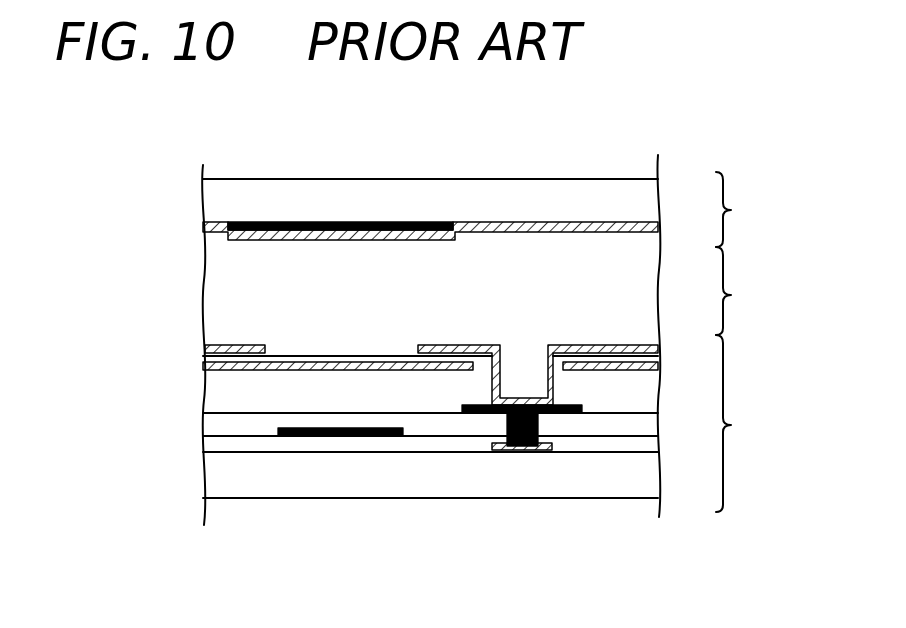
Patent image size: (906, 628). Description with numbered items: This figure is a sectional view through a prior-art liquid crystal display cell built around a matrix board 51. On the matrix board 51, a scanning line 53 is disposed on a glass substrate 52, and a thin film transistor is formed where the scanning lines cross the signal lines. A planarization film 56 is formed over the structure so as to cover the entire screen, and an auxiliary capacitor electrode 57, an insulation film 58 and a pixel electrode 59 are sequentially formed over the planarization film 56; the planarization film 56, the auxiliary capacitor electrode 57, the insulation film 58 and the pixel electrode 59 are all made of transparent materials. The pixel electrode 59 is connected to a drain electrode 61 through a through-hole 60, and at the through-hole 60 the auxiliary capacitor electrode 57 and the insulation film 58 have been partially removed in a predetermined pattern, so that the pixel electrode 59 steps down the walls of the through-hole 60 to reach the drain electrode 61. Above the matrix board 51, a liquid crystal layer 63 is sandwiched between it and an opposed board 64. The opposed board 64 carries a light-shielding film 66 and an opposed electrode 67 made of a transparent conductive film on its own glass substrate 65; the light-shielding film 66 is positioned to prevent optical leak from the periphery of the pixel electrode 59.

The matrix board 51 is at (747, 423).
The glass substrate 52 is at (208, 473).
The scanning line 53 is at (290, 437).
The planarization film 56 is at (205, 392).
The auxiliary capacitor electrode 57 is at (207, 364).
The insulation film 58 is at (207, 355).
The pixel electrode 59 is at (207, 348).
The through-hole 60 is at (528, 373).
The drain electrode 61 is at (527, 448).
The liquid crystal layer 63 is at (745, 291).
The opposed board 64 is at (745, 209).
The glass substrate 65 is at (210, 203).
The light-shielding film 66 is at (315, 224).
The opposed electrode 67 is at (205, 226).